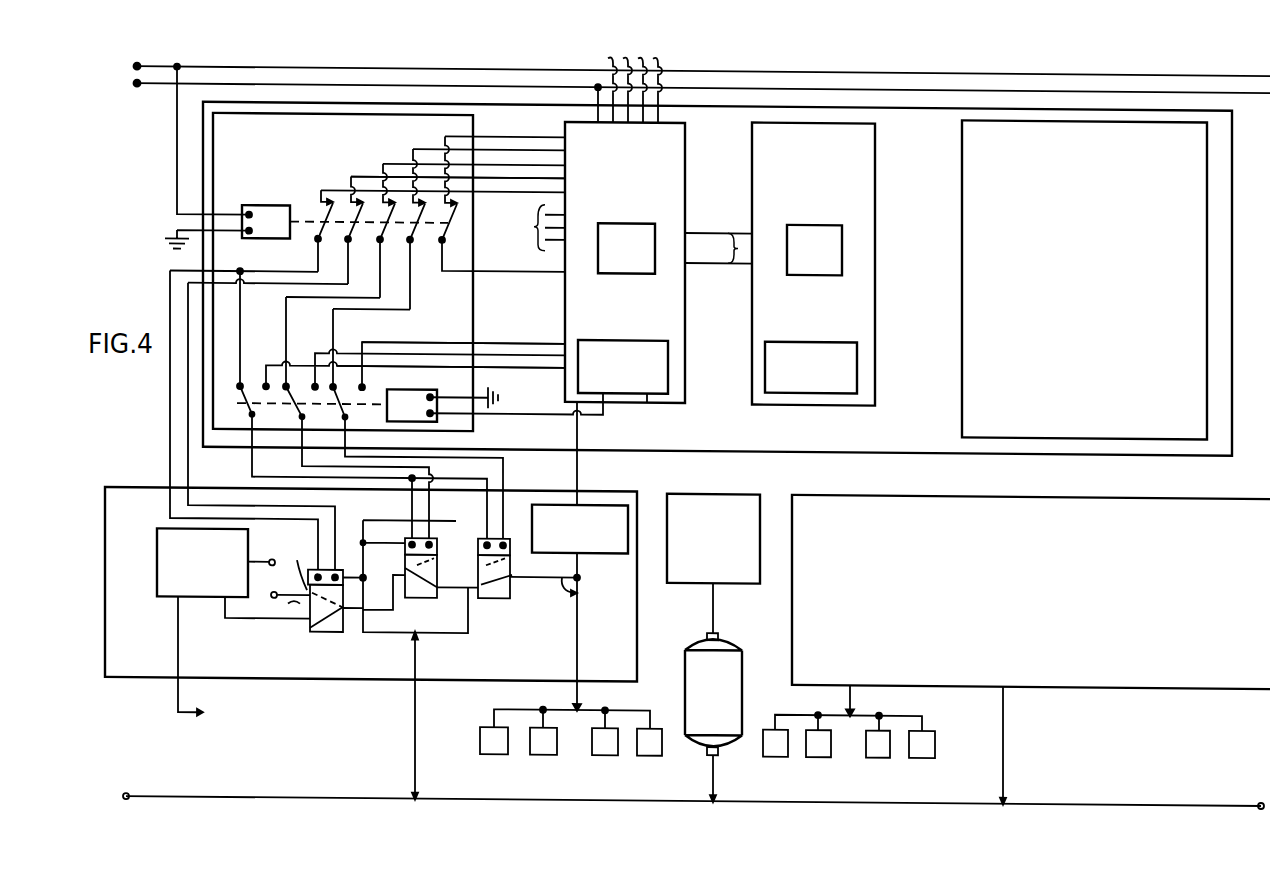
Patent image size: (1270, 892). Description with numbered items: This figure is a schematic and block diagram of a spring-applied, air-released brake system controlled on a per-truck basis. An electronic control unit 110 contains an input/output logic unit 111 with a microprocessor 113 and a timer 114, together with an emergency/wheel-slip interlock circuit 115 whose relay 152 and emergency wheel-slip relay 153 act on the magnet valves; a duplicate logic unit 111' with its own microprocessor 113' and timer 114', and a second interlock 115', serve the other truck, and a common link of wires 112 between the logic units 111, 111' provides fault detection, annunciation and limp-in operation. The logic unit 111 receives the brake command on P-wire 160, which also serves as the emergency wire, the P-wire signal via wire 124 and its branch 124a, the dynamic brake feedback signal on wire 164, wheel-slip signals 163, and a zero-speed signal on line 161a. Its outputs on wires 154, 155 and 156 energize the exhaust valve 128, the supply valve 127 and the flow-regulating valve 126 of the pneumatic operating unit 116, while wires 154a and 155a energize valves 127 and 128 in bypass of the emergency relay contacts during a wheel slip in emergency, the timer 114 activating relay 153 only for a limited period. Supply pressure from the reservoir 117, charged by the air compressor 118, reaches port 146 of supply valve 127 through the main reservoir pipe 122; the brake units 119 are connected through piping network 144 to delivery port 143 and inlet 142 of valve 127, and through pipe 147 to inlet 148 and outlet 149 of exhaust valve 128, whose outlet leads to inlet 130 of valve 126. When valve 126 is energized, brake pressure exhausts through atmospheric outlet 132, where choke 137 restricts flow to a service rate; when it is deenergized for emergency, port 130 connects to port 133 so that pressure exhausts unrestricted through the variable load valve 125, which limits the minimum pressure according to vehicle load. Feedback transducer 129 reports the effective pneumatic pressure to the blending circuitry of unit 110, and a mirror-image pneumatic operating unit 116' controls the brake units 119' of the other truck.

The electronic control unit 110 is at (945, 440).
The input/output logic unit 111 is at (625, 262).
The logic unit 111' is at (813, 264).
The wires 112 is at (718, 248).
The microprocessor 113 is at (626, 248).
The microprocessor 113' is at (814, 250).
The timer 114 is at (623, 371).
The timer relay 114' is at (811, 368).
The emergency/wheel-slip interlock circuit 115 is at (367, 271).
The emergency/wheel slip interlock 115' is at (1084, 279).
The pneumatic operating unit 116 is at (371, 584).
The pneumatic operating unit 116' is at (1031, 651).
The air reservoir 117 is at (698, 697).
The air compressor 118 is at (695, 565).
The brake units 119 is at (571, 743).
The brake units 119' is at (849, 735).
The supply pipe 122 is at (412, 790).
The wire 124 is at (338, 82).
The power branch line 124a is at (596, 106).
The variable load valve 125 is at (166, 597).
The flow-regulating magnet valve 126 is at (335, 632).
The supply valve 127 is at (512, 596).
The exhaust valve 128 is at (405, 597).
The feedback transducer 129 is at (567, 543).
The inlet 130 is at (350, 609).
The atmospheric outlet 132 is at (279, 572).
The port 133 is at (310, 624).
The choke 137 is at (292, 589).
The inlet 142 is at (472, 584).
The delivery port 143 is at (513, 573).
The piping network 144 is at (592, 586).
The port 146 is at (477, 553).
The pipe 147 is at (462, 583).
The inlet 148 is at (442, 586).
The outlet 149 is at (406, 565).
The relay 152 is at (288, 231).
The emergency wheel-slip relay 153 is at (424, 414).
The wire 154 is at (500, 175).
The wire 154a is at (498, 364).
The wire 155 is at (394, 162).
The wire 155a is at (537, 338).
The wire 156 is at (432, 146).
The emergency wire 160 is at (264, 64).
The line 161a is at (648, 400).
The wheel-slip signals 163 is at (529, 227).
The wire 164 is at (611, 60).